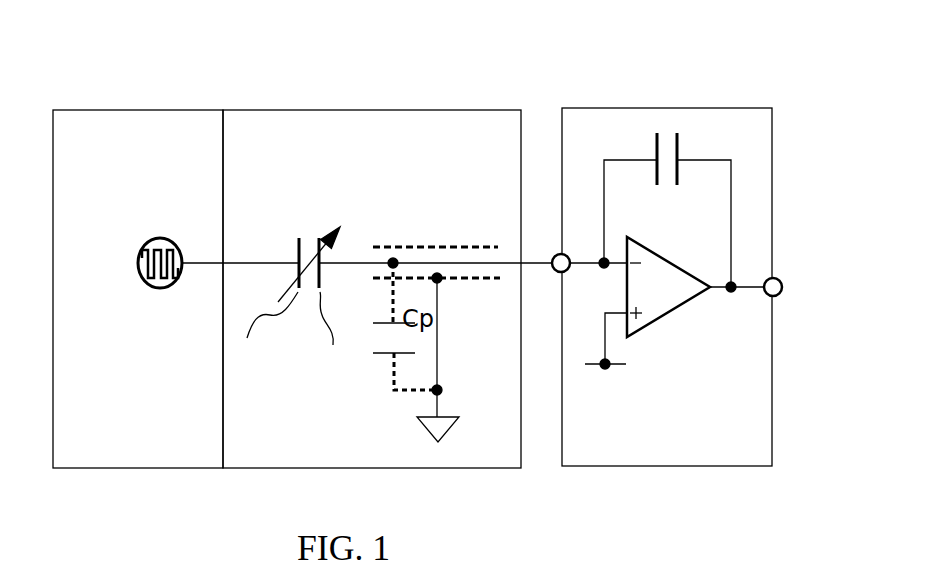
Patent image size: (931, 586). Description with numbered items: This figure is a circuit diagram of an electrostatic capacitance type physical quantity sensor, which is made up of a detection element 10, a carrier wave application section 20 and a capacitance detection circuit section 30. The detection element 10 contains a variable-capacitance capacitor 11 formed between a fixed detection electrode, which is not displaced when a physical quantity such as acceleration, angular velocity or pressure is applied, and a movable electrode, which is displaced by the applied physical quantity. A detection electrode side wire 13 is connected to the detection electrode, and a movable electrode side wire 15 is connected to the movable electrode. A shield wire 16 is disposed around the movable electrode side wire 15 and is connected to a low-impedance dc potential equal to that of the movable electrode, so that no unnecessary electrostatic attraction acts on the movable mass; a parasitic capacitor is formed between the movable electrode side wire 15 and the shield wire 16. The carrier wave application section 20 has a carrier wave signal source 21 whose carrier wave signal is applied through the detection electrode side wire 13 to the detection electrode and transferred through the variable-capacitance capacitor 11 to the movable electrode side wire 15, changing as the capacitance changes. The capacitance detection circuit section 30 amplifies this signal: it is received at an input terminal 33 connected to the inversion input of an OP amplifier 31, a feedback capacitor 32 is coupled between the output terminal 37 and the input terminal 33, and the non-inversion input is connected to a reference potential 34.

The detection element 10 is at (263, 110).
The variable-capacitance capacitor 11 is at (308, 238).
The detection electrode side wire 13 is at (255, 263).
The movable electrode side wire 15 is at (457, 278).
The shield wire 16 is at (412, 247).
The carrier wave application section 20 is at (95, 110).
The carrier wave signal source 21 is at (147, 245).
The capacitance detection circuit section 30 is at (605, 108).
The OP amplifier 31 is at (667, 317).
The feedback capacitor 32 is at (683, 172).
The input terminal 33 is at (582, 256).
The reference potential 34 is at (618, 375).
The output terminal 37 is at (778, 275).